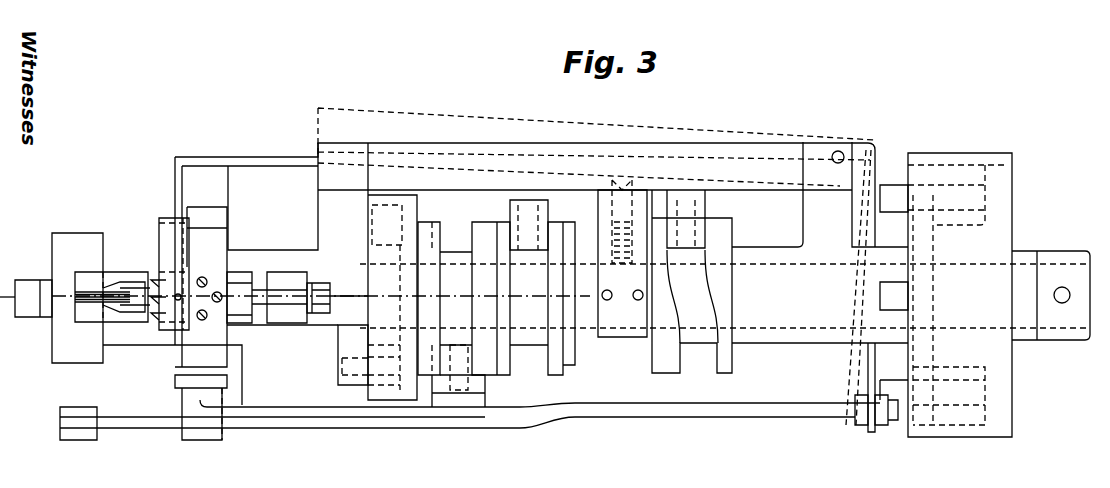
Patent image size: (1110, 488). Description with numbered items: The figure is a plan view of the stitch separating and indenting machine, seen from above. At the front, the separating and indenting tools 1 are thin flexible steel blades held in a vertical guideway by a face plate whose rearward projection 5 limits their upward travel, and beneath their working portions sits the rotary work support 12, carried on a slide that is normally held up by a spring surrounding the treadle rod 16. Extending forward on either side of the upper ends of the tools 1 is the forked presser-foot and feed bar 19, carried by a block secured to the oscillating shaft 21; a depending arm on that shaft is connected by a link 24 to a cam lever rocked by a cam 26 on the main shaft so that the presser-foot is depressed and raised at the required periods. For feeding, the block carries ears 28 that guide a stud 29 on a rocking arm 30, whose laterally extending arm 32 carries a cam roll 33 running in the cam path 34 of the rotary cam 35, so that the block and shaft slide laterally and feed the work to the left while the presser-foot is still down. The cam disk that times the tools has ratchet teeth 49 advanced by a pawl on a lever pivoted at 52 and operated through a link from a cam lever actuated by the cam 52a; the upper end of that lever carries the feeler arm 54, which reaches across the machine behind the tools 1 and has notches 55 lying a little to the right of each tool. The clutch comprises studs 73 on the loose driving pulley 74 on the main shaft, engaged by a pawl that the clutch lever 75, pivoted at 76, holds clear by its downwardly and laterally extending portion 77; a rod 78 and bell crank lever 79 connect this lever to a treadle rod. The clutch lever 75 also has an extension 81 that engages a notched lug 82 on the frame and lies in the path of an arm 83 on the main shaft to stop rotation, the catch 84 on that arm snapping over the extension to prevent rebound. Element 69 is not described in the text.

The separating and indenting tools 1 is at (130, 288).
The rearward projection 5 is at (570, 295).
The rotary work support 12 is at (70, 240).
The treadle rod 16 is at (32, 300).
The forked presser-foot and feed bar 19 is at (86, 325).
The oscillating shaft 21 is at (175, 380).
The link 24 is at (285, 408).
The cam 26 is at (485, 228).
The ears 28 is at (240, 277).
The stud 29 is at (250, 292).
The rocking arm 30 is at (316, 279).
The laterally extending arm 32 is at (340, 343).
The cam roll 33 is at (385, 383).
The cam path 34 is at (382, 219).
The rotary cam 35 is at (417, 210).
The ratchet teeth 49 is at (483, 484).
The pivot 52 is at (513, 202).
The cam 52a is at (537, 367).
The arm 54 is at (160, 240).
The notches 55 is at (158, 308).
The fork 69 is at (723, 365).
The studs 73 is at (890, 190).
The loose driving pulley 74 is at (1003, 202).
The clutch lever 75 is at (782, 142).
The pivot 76 is at (840, 150).
The downwardly and laterally extending portion 77 is at (867, 373).
The rod 78 is at (612, 410).
The bell crank lever 79 is at (78, 440).
The extension 81 is at (448, 147).
The notched lug 82 is at (318, 172).
The arm 83 is at (605, 200).
The catch 84 is at (627, 193).